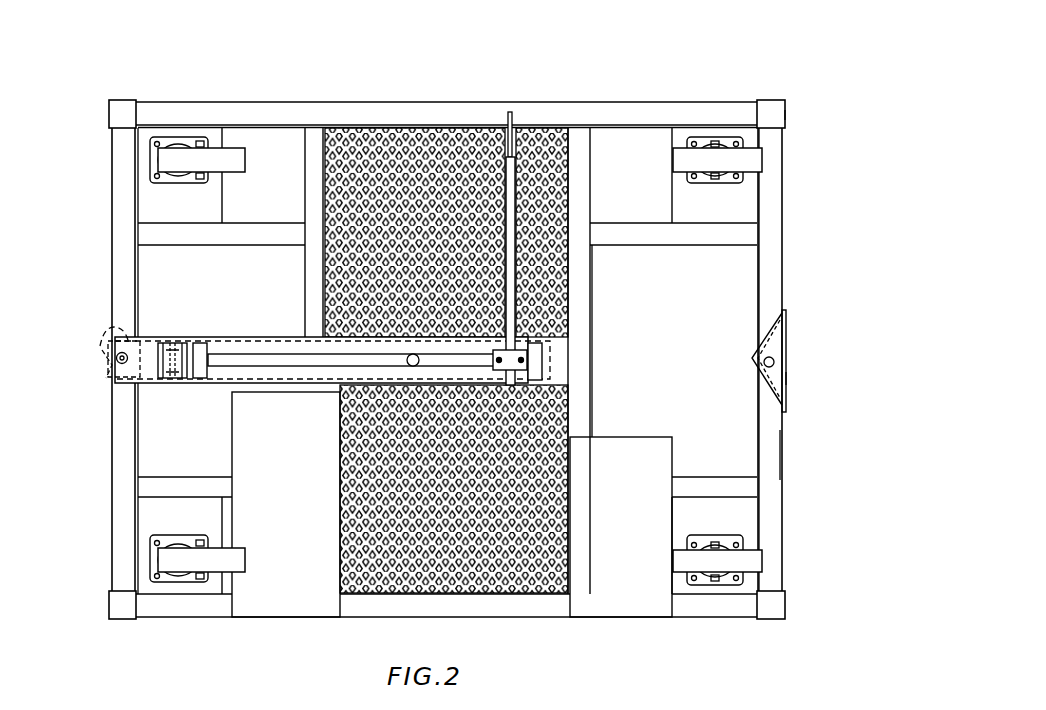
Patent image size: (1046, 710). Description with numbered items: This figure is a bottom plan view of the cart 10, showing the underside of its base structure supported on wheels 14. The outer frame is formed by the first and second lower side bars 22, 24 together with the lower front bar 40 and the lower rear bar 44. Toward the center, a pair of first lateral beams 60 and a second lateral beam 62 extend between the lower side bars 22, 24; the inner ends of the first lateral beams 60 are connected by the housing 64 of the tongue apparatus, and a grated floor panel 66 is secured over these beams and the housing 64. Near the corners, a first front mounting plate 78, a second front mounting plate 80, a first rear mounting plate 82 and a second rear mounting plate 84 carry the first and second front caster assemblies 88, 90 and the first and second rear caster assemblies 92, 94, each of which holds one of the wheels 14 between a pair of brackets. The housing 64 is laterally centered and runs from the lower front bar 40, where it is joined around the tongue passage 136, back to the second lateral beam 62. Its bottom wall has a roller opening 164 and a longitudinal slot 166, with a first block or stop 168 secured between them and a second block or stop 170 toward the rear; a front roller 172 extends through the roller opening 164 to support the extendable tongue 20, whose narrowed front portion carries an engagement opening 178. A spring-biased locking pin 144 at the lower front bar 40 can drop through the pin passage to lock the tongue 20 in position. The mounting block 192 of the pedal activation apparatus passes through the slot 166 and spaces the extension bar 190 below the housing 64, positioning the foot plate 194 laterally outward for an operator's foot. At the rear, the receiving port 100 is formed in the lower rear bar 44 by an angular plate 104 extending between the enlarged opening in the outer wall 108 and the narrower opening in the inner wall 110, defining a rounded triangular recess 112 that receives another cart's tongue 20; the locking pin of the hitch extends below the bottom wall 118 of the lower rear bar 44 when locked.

The cart 10 is at (803, 155).
The wheels 14 is at (230, 150).
The tongue 20 is at (237, 360).
The first lower side bar 22 is at (258, 124).
The second lower side bar 24 is at (445, 608).
The lower front bar 40 is at (118, 548).
The lower rear bar 44 is at (768, 256).
The first lateral beams 60 is at (316, 140).
The second lateral beam 62 is at (588, 140).
The housing 64 is at (368, 340).
The floor panel 66 is at (416, 150).
The first front mounting plate 78 is at (152, 204).
The second front mounting plate 80 is at (150, 513).
The first rear mounting plate 82 is at (690, 200).
The second rear mounting plate 84 is at (732, 510).
The first front caster assembly 88 is at (178, 138).
The second front caster assembly 90 is at (180, 590).
The first rear caster assembly 92 is at (703, 137).
The second rear caster assembly 94 is at (715, 588).
The receiving port 100 is at (790, 340).
The angular plate 104 is at (757, 362).
The outer wall 108 is at (782, 453).
The inner wall 110 is at (760, 296).
The recess 112 is at (785, 378).
The bottom wall 118 is at (768, 208).
The tongue passage 136 is at (100, 352).
The locking pin 144 is at (118, 372).
The roller opening 164 is at (200, 388).
The longitudinal slot 166 is at (290, 350).
The first block or stop 168 is at (243, 388).
The second block or stop 170 is at (535, 362).
The front roller 172 is at (165, 385).
The engagement opening 178 is at (100, 338).
The extension bar 190 is at (512, 288).
The mounting block 192 is at (511, 388).
The foot plate 194 is at (512, 110).